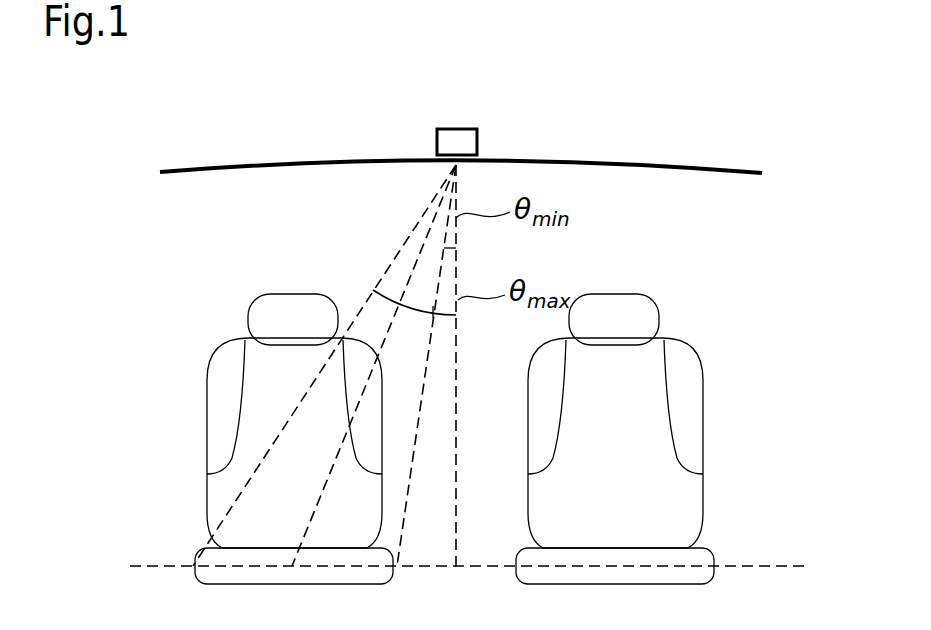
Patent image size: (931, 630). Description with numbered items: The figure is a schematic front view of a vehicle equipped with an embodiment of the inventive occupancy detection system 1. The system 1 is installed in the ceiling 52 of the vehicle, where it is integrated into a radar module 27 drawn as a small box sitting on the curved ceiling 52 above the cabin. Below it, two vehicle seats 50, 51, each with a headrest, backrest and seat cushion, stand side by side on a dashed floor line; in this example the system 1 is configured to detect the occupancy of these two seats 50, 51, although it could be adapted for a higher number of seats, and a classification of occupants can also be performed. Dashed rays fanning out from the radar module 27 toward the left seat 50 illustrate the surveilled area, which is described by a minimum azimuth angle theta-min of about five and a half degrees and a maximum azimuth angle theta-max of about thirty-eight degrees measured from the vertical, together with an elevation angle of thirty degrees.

The occupancy detection system 1 is at (527, 90).
The radar module 27 is at (477, 130).
The vehicle seat 50 is at (215, 390).
The vehicle seat 51 is at (700, 382).
The ceiling 52 is at (690, 162).